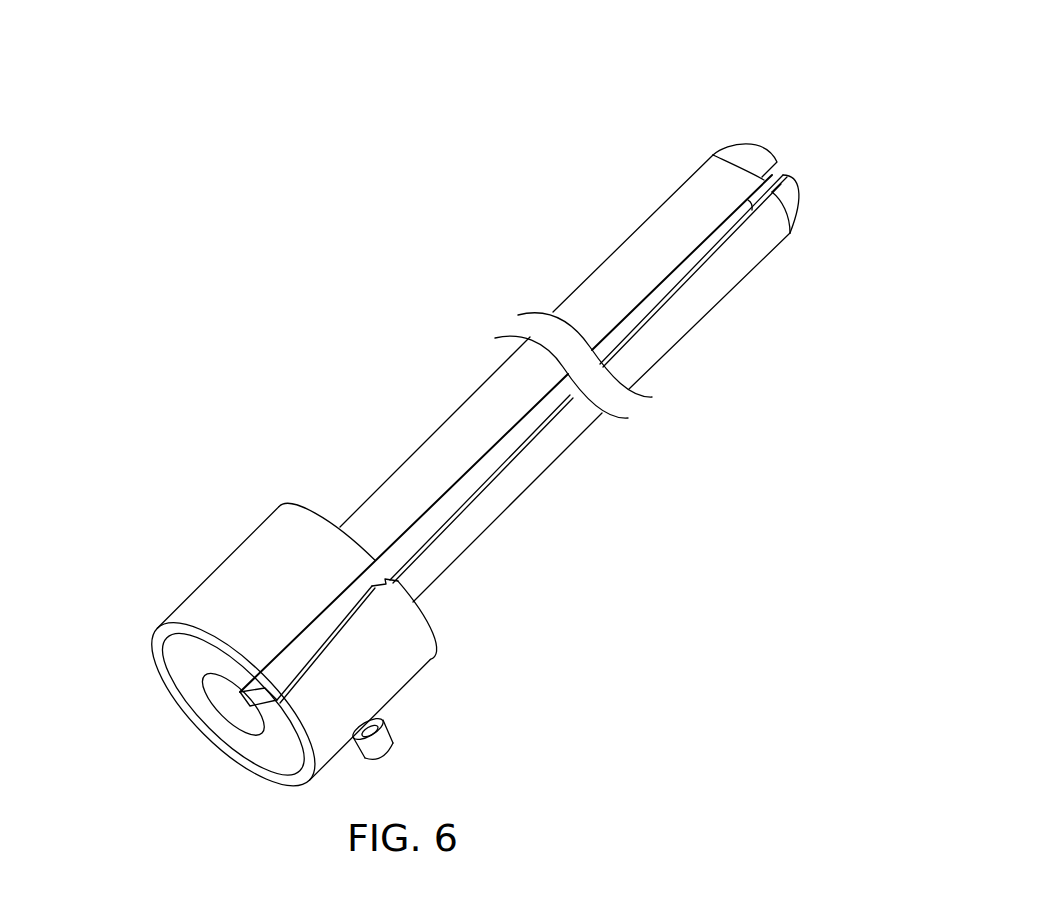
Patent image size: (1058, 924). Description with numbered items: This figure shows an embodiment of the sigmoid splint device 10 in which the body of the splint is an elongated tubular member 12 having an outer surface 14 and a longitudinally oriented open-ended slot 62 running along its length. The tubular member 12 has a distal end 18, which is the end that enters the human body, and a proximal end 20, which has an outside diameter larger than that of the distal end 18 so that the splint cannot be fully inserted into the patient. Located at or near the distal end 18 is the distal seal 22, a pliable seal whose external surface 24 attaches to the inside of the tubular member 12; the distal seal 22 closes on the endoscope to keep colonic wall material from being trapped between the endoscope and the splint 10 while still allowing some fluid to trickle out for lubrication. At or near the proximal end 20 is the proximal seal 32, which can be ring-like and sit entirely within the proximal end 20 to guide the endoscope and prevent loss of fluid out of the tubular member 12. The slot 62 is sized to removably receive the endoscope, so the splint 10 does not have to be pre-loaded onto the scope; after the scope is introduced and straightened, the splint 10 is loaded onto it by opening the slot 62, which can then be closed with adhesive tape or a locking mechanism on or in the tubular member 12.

The sigmoid splint device 10 is at (298, 300).
The elongated tubular member 12 is at (490, 534).
The outer surface 14 is at (483, 410).
The distal end 18 is at (578, 284).
The proximal end 20 is at (404, 655).
The distal seal 22 is at (736, 149).
The external surface 24 is at (790, 197).
The proximal seal 32 is at (195, 658).
The longitudinally oriented open-ended slot 62 is at (680, 267).